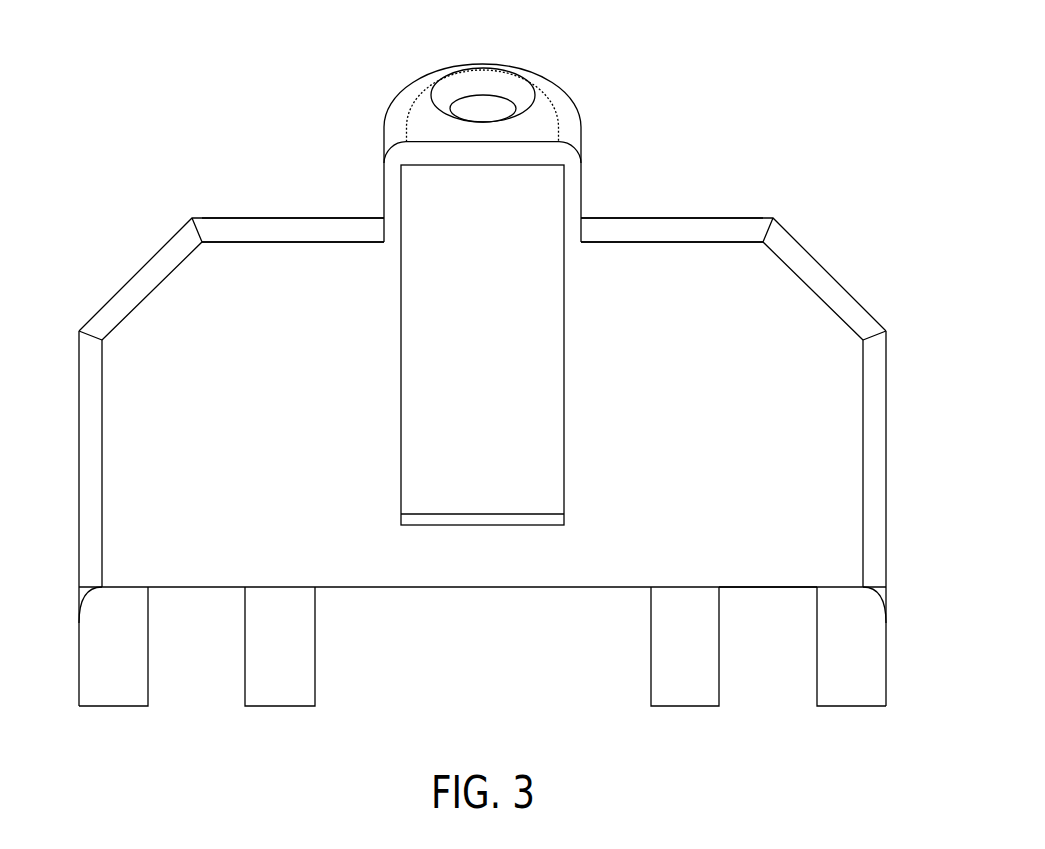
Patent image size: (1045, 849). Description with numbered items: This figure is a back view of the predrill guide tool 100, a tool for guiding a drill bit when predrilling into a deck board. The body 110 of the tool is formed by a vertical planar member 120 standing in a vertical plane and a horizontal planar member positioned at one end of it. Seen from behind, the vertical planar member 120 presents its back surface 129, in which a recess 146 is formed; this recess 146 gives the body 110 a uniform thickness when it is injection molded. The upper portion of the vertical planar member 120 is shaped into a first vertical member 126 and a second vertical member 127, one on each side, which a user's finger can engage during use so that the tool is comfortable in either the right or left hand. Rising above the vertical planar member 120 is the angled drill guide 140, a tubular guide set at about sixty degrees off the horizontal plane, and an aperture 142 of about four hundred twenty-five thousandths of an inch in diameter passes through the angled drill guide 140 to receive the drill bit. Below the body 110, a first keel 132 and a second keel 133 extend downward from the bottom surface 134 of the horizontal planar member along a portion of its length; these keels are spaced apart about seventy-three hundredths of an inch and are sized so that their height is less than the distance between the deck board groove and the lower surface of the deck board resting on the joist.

The predrill guide tool 100 is at (680, 71).
The body 110 is at (835, 278).
The vertical planar member 120 is at (851, 385).
The first vertical member 126 is at (262, 268).
The second vertical member 127 is at (672, 267).
The back surface 129 is at (118, 409).
The first keel 132 is at (680, 692).
The second keel 133 is at (290, 692).
The bottom surface 134 is at (765, 588).
The angled drill guide 140 is at (567, 110).
The aperture 142 is at (483, 108).
The recess 146 is at (422, 238).